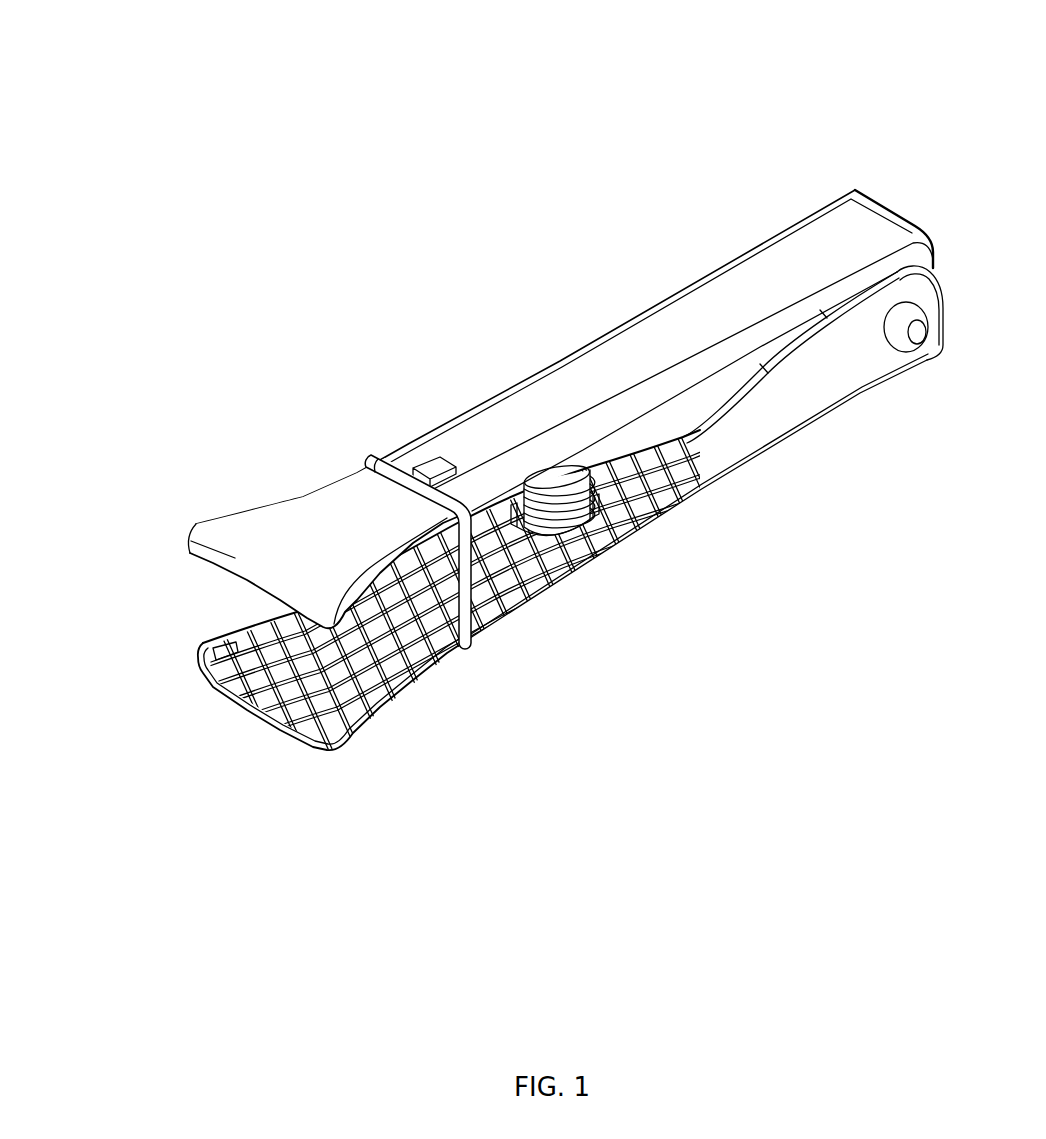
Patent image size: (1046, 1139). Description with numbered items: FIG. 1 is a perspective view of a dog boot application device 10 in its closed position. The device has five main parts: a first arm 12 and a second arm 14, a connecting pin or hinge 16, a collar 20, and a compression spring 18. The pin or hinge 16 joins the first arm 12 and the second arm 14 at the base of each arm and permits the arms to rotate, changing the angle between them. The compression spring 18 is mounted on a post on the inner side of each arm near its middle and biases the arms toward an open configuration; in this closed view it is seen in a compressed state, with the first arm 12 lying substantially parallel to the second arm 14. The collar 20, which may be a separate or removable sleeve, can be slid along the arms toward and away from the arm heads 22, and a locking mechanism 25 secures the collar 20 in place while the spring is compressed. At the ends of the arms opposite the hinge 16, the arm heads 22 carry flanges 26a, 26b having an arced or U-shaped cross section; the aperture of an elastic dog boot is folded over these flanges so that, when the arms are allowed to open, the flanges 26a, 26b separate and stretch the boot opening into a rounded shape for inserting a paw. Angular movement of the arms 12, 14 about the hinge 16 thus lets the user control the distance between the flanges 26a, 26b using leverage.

The dog boot application device 10 is at (826, 116).
The first arm 12 is at (700, 302).
The second arm 14 is at (781, 419).
The connecting pin or hinge 16 is at (915, 329).
The compression spring 18 is at (565, 497).
The collar 20 is at (472, 597).
The arm heads 22 is at (323, 532).
The locking mechanism 25 is at (430, 470).
The flange 26a is at (232, 548).
The flange 26b is at (240, 704).